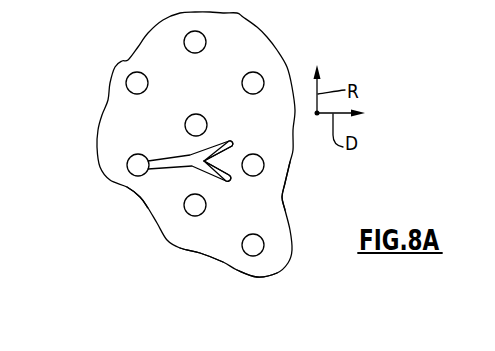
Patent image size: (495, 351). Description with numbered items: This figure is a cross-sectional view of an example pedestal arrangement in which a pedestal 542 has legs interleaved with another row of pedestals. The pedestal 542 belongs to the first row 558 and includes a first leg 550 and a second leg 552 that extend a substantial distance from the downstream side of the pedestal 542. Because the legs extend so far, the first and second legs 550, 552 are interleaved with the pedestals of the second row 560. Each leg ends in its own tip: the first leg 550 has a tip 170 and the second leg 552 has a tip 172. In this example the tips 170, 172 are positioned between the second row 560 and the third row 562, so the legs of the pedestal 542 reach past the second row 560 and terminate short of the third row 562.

The pedestal 542 is at (127, 167).
The first leg 550 is at (230, 142).
The tip 170 is at (233, 143).
The second leg 552 is at (218, 177).
The tip 172 is at (291, 195).
The first row 558 is at (137, 217).
The second row 560 is at (193, 270).
The third row 562 is at (254, 297).